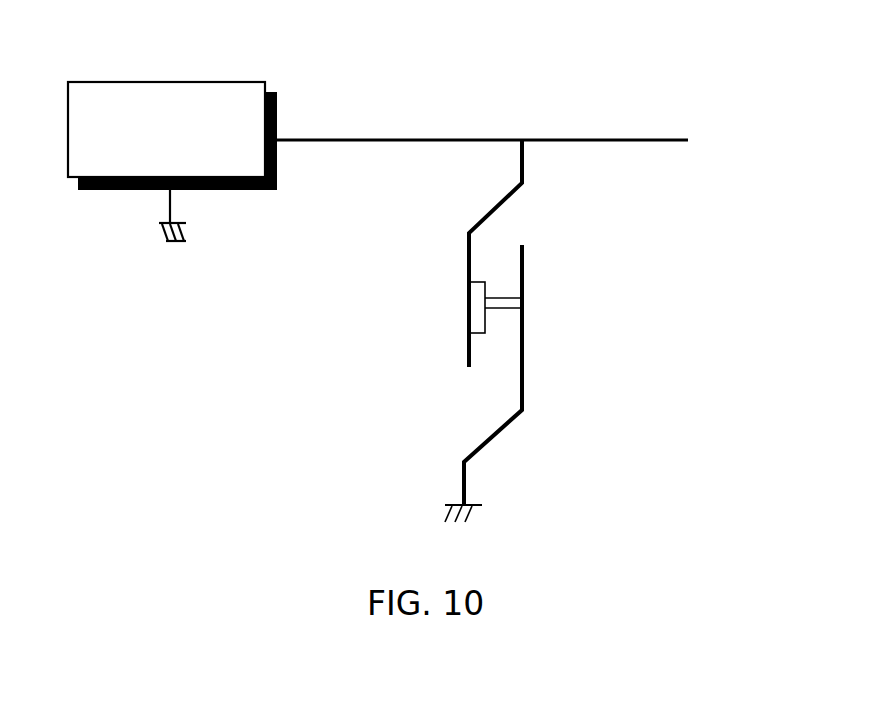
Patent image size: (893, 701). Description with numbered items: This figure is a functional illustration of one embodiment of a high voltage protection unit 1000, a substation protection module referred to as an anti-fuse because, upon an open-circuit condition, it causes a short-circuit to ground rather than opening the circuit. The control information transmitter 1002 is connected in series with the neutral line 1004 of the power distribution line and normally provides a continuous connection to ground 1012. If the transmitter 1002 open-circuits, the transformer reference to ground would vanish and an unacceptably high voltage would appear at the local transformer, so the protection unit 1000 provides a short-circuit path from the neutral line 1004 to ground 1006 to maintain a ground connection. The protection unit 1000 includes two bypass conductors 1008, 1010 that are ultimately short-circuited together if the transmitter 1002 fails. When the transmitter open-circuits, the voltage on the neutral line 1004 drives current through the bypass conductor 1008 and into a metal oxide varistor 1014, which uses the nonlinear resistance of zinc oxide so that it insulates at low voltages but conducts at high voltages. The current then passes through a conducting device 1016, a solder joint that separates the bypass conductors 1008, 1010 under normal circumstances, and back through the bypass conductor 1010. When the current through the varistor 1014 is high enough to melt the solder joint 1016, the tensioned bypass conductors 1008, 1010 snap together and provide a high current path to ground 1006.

The high voltage protection unit 1000 is at (626, 265).
The control information transmitter 1002 is at (237, 82).
The neutral line 1004 is at (407, 142).
The ground 1006 is at (463, 517).
The bypass conductor 1008 is at (483, 218).
The bypass conductor 1010 is at (490, 445).
The ground 1012 is at (186, 240).
The metal oxide varistor 1014 is at (485, 333).
The conducting device 1016 is at (500, 296).